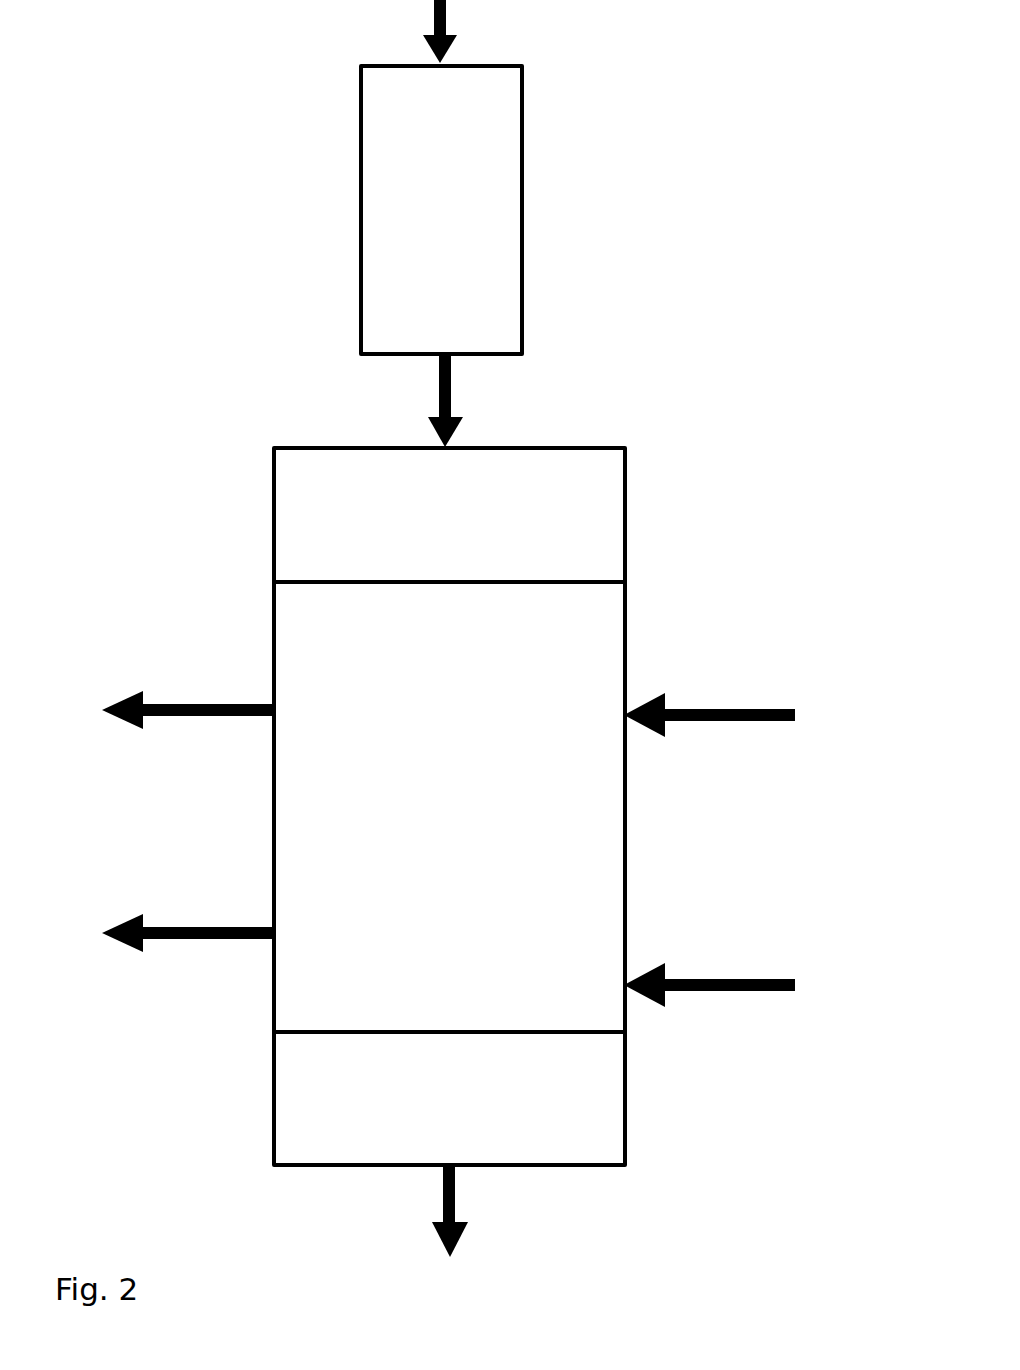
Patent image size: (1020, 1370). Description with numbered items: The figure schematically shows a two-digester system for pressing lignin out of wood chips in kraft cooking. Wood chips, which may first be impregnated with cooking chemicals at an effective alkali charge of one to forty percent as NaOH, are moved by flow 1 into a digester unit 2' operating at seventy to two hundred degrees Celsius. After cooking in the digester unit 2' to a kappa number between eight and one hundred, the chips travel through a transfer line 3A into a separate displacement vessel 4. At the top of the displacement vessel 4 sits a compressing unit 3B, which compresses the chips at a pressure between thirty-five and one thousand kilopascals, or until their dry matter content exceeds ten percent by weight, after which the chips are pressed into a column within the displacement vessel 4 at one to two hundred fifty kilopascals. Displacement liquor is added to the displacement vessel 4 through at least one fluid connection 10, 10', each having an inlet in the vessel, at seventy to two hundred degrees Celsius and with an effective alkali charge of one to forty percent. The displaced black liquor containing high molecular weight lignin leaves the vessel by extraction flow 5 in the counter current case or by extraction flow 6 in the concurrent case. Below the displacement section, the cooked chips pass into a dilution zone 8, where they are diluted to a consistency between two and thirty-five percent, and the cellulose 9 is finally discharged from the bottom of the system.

The flow 1 is at (447, 20).
The digester unit 2' is at (510, 210).
The transfer line 3A is at (452, 380).
The compressing unit 3B is at (624, 515).
The displacement vessel 4 is at (624, 828).
The extraction flow 5 is at (180, 703).
The extraction flow 6 is at (197, 940).
The dilution zone 8 is at (625, 1110).
The cellulose 9 is at (455, 1202).
The fluid connection 10 is at (715, 687).
The fluid connection 10' is at (720, 958).